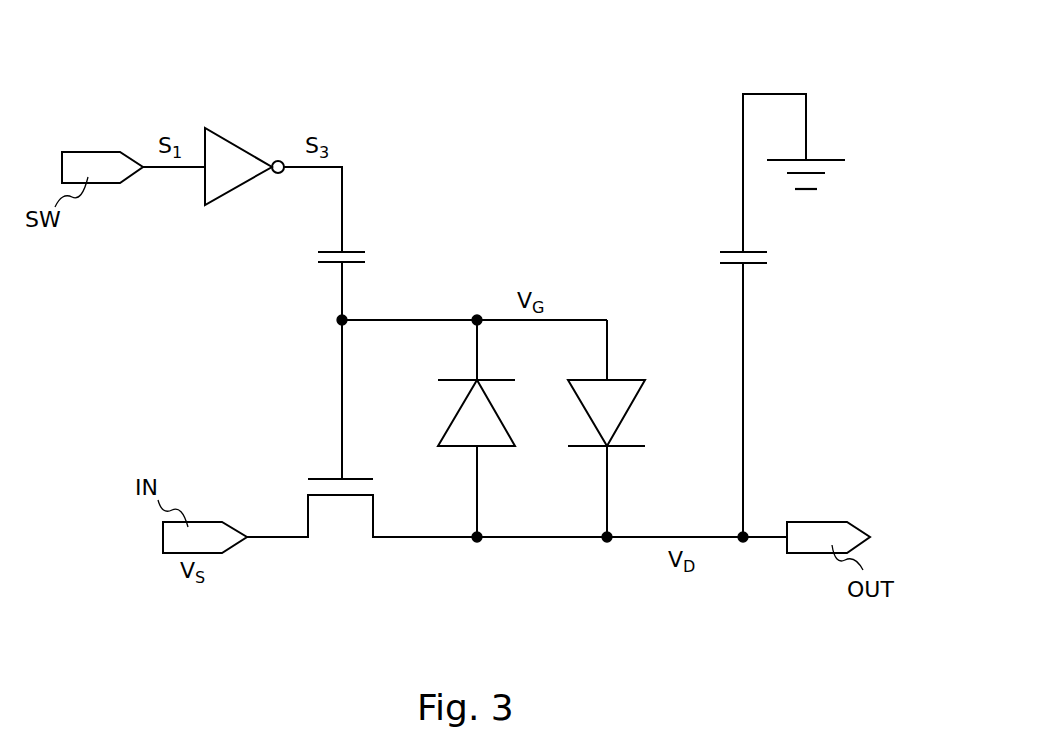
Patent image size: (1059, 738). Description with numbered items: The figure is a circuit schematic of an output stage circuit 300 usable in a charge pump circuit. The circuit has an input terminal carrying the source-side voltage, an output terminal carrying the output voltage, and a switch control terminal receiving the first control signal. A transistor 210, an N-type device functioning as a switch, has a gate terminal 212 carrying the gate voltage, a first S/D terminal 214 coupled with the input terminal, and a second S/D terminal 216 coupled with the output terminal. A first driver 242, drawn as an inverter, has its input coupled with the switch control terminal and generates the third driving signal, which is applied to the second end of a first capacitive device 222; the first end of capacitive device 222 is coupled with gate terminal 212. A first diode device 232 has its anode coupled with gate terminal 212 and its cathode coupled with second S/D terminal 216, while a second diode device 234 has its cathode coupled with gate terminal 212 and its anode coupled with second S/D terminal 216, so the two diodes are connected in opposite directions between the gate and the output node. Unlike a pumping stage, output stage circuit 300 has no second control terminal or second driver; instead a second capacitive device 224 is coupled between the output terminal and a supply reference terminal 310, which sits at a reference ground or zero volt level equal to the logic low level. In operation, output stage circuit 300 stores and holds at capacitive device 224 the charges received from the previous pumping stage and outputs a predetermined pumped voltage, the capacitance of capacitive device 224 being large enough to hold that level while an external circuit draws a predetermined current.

The output stage circuit 300 is at (818, 57).
The supply reference terminal 310 is at (806, 110).
The first driver 242 is at (228, 150).
The first capacitive device 222 is at (300, 257).
The second capacitive device 224 is at (698, 257).
The gate terminal 212 is at (340, 435).
The transistor 210 is at (341, 540).
The first S/D terminal 214 is at (275, 538).
The second S/D terminal 216 is at (415, 538).
The second diode device 234 is at (463, 427).
The first diode device 232 is at (620, 410).